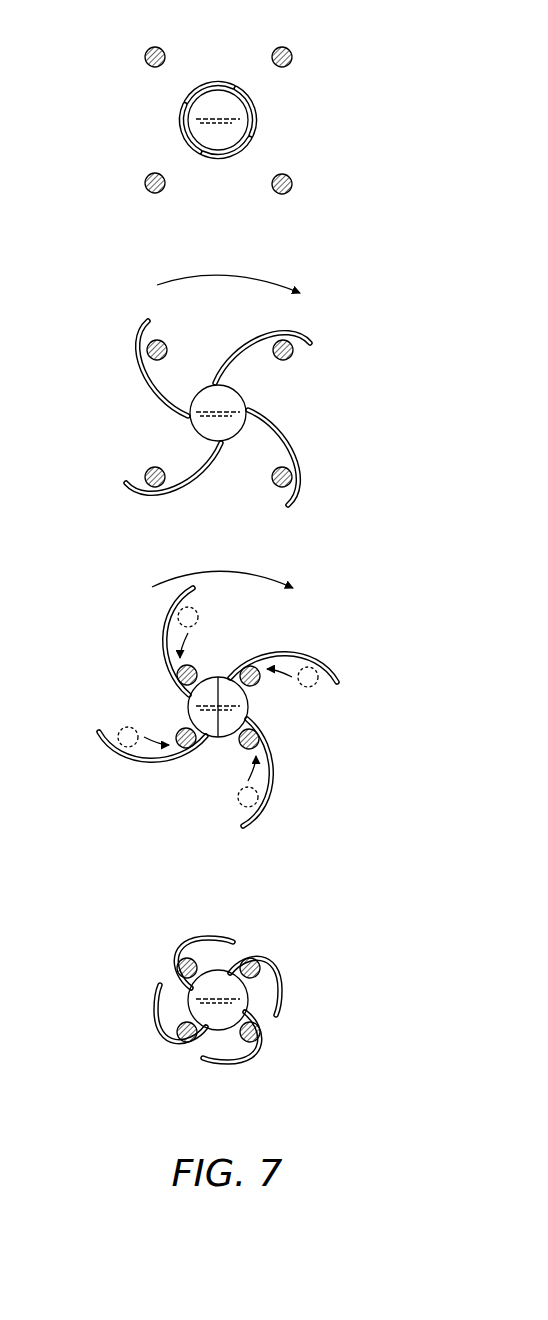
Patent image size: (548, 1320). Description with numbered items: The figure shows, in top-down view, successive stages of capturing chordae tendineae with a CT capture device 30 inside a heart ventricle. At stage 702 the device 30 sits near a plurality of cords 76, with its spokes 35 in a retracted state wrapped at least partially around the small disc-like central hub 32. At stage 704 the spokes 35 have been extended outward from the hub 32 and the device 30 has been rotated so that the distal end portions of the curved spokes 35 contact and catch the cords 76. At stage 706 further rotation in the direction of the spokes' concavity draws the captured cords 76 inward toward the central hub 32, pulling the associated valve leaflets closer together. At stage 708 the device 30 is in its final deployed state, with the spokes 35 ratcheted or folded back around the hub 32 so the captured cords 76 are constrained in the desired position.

The CT capture device 30 is at (229, 553).
The central hub 32 is at (215, 147).
The spokes 35 is at (193, 147).
The cords 76 is at (143, 60).
The stage 702 is at (331, 62).
The stage 704 is at (329, 357).
The stage 706 is at (304, 627).
The stage 708 is at (303, 967).